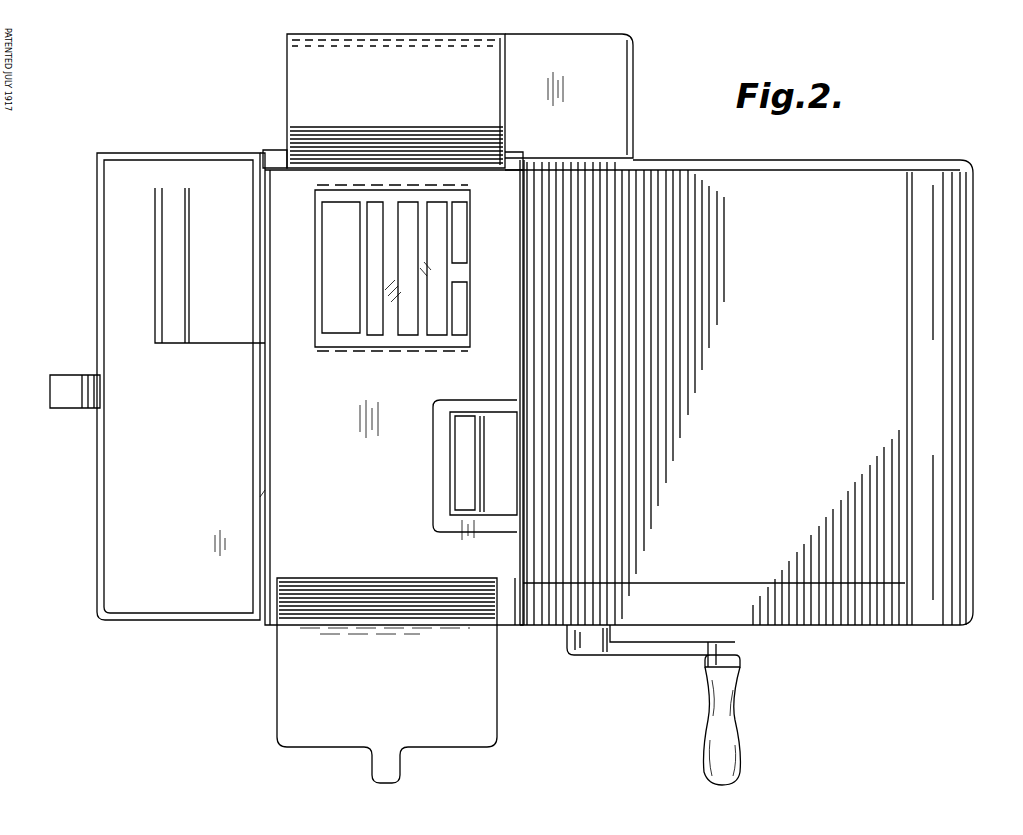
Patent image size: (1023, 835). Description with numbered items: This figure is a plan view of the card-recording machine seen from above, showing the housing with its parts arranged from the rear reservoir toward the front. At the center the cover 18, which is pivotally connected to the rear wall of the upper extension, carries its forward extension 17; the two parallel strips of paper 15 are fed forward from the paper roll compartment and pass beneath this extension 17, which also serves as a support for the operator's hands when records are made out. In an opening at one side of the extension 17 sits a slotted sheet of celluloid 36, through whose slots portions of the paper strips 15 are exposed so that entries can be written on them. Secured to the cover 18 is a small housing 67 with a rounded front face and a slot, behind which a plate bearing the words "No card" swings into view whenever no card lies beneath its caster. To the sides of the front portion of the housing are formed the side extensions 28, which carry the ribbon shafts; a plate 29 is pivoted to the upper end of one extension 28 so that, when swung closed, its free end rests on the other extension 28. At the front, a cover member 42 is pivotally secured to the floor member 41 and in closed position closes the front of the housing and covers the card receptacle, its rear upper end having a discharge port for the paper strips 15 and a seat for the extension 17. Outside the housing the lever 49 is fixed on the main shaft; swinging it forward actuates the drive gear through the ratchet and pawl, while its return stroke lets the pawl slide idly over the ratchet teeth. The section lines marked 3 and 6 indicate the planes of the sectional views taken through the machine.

The strips of paper 15 is at (196, 340).
The forward extension of the cover 17 is at (369, 387).
The cover 18 is at (749, 392).
The side extensions 28 is at (282, 78).
The plate 29 is at (396, 680).
The sheet of celluloid 36 is at (392, 332).
The floor member 41 is at (90, 538).
The cover member 42 is at (96, 478).
The lever 49 is at (643, 652).
The small housing 67 is at (482, 416).
The section line 3- 3 is at (522, 372).
The section line 6- 6 is at (262, 614).